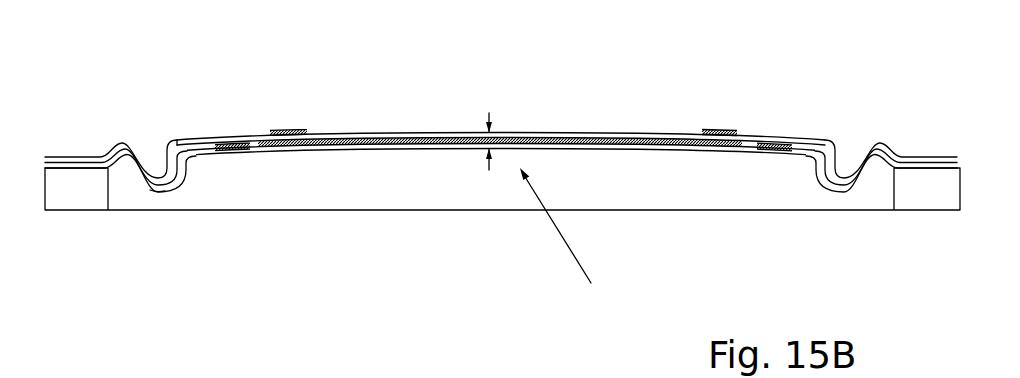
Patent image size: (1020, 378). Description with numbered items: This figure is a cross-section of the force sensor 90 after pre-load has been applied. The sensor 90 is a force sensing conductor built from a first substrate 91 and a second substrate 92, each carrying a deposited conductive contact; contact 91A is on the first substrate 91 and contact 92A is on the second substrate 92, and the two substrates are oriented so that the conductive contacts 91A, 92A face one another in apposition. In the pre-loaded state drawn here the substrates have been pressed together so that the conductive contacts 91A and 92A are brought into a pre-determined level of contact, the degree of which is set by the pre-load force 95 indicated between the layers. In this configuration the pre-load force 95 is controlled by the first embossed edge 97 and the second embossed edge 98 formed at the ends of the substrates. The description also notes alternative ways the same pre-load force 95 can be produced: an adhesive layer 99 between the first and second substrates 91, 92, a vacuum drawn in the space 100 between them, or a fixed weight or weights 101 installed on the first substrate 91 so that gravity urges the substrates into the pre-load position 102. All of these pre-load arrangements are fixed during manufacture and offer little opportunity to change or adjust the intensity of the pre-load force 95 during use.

The sensor 90 is at (119, 25).
The first substrate 91 is at (347, 133).
The conductive contact 91A is at (268, 141).
The second substrate 92 is at (385, 147).
The conductive contact 92A is at (269, 150).
The pre-load force 95 is at (490, 114).
The first embossed edge 97 is at (112, 150).
The second embossed edge 98 is at (152, 193).
The adhesive layer 99 is at (229, 150).
The space 100 is at (176, 148).
The fixed weight 101 is at (288, 129).
The pre-load position 102 is at (575, 236).